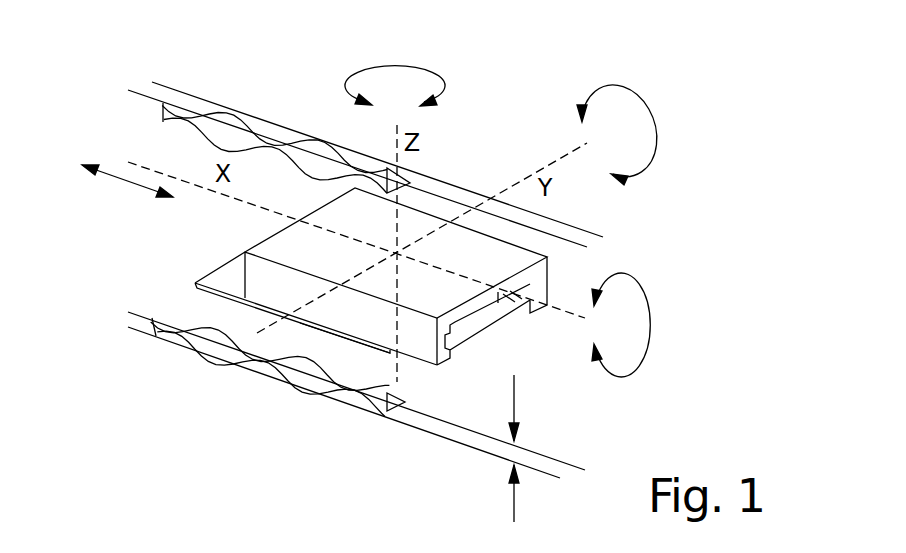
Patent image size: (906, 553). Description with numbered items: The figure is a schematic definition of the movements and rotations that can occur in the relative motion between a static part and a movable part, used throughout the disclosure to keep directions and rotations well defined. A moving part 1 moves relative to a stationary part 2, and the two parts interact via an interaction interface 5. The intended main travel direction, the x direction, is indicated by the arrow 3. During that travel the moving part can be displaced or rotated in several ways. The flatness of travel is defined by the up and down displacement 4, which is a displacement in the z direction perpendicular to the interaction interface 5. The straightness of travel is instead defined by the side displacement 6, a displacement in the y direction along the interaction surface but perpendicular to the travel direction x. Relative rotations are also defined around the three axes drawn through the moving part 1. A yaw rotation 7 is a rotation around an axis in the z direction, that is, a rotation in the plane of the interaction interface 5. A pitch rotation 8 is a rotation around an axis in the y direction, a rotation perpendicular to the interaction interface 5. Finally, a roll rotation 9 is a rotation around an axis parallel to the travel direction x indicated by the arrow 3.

The moving part 1 is at (547, 257).
The stationary part 2 is at (205, 280).
The arrow 3 is at (127, 189).
The up and down displacement 4 is at (228, 362).
The interaction interface 5 is at (340, 337).
The side displacement 6 is at (203, 100).
The yaw rotation 7 is at (452, 100).
The pitch rotation 8 is at (618, 88).
The roll rotation 9 is at (643, 290).